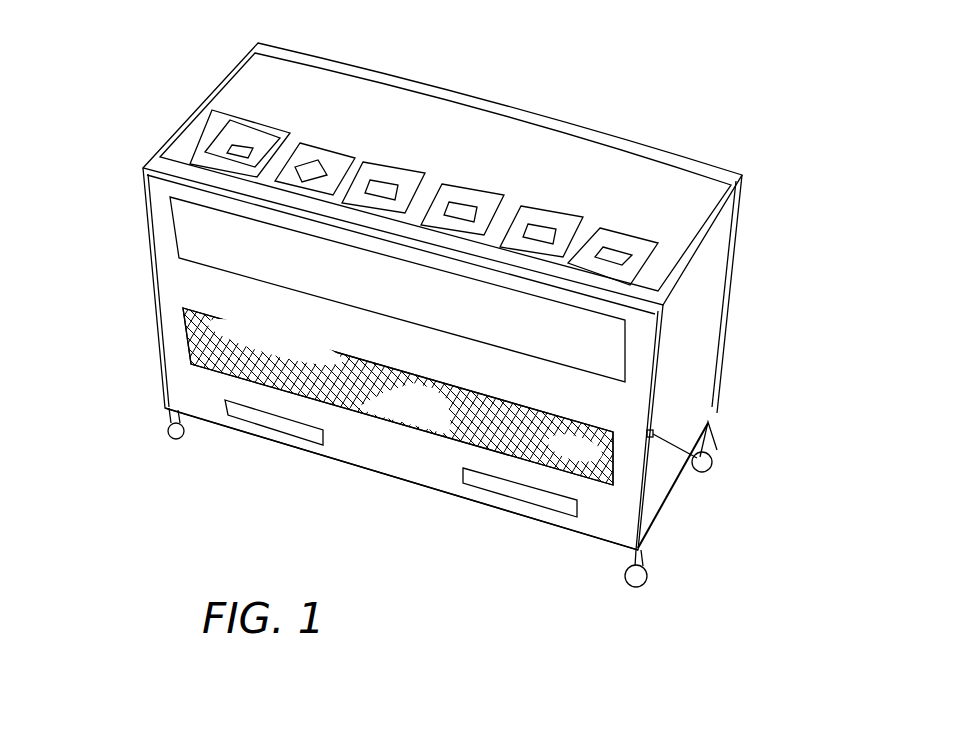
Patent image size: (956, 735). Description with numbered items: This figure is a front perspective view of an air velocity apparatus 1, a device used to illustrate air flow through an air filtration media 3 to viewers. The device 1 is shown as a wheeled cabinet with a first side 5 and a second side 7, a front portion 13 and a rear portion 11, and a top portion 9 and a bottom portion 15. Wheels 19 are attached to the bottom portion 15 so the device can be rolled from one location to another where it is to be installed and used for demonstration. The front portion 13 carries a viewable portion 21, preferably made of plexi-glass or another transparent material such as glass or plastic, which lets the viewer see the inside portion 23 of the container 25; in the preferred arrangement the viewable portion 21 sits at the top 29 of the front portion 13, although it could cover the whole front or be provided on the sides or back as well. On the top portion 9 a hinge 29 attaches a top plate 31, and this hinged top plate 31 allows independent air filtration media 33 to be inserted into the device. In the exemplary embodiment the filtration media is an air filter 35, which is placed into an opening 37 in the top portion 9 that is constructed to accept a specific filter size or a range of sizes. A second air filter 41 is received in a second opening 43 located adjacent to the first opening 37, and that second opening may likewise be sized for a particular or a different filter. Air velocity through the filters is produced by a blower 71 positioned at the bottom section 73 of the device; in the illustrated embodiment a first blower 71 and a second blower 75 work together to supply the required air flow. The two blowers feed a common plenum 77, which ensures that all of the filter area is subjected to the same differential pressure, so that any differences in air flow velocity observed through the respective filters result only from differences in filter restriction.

The air velocity apparatus 1 is at (738, 60).
The air filtration media 3 is at (622, 240).
The first side 5 is at (134, 222).
The second side 7 is at (713, 277).
The top portion 9 is at (510, 150).
The rear portion 11 is at (755, 231).
The front portion 13 is at (622, 497).
The bottom portion 15 is at (556, 545).
The wheels 19 is at (179, 443).
The viewable portion 21 is at (600, 353).
The inside portion 23 is at (368, 466).
The container 25 is at (145, 367).
The hinge 29 is at (637, 380).
The top plate 31 is at (550, 217).
The air filtration media 33 is at (397, 182).
The air filter 35 is at (292, 150).
The opening 37 is at (613, 453).
The second air filter 41 is at (252, 138).
The second opening 43 is at (330, 193).
The blower 71 is at (528, 503).
The bottom section 73 is at (410, 470).
The second blower 75 is at (280, 433).
The common plenum 77 is at (712, 462).